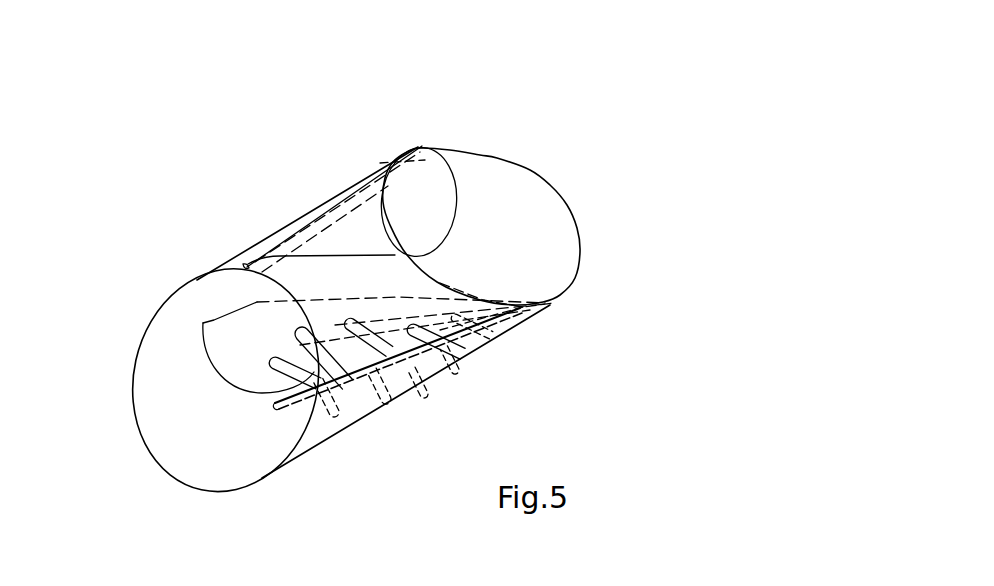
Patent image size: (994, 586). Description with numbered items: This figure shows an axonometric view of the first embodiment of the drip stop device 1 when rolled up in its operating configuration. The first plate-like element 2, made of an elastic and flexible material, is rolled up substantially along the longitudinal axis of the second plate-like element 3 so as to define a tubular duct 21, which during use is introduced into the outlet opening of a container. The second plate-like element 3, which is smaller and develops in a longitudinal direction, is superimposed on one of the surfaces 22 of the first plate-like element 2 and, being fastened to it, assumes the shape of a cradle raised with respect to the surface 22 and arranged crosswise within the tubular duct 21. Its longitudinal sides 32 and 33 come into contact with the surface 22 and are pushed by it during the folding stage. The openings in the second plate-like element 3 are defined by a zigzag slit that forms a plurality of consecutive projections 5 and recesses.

The drip stop device 1 is at (655, 62).
The first plate-like element 2 is at (550, 217).
The tubular duct 21 is at (187, 447).
The surface of the first plate-like element 22 is at (155, 387).
The second plate-like element 3 is at (236, 341).
The longitudinal side of the second plate-like element 32 is at (521, 303).
The longitudinal side of the second plate-like element 33 is at (257, 302).
The projections 5 is at (403, 367).